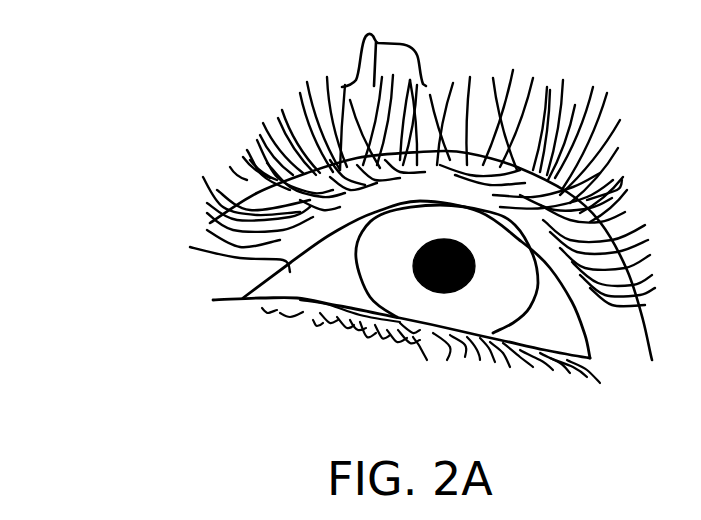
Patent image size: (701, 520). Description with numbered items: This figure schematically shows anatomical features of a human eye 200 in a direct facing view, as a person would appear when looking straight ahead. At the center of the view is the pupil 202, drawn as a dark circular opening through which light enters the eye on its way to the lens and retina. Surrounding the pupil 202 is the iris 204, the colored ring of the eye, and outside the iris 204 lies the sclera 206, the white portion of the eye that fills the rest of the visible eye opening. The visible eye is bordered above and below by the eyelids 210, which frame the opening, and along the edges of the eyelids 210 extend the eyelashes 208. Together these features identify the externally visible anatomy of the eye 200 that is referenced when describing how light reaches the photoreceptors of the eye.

The eye 200 is at (215, 80).
The pupil 202 is at (430, 293).
The iris 204 is at (510, 323).
The sclera 206 is at (573, 338).
The eyelashes 208 is at (429, 185).
The eyelids 210 is at (250, 258).